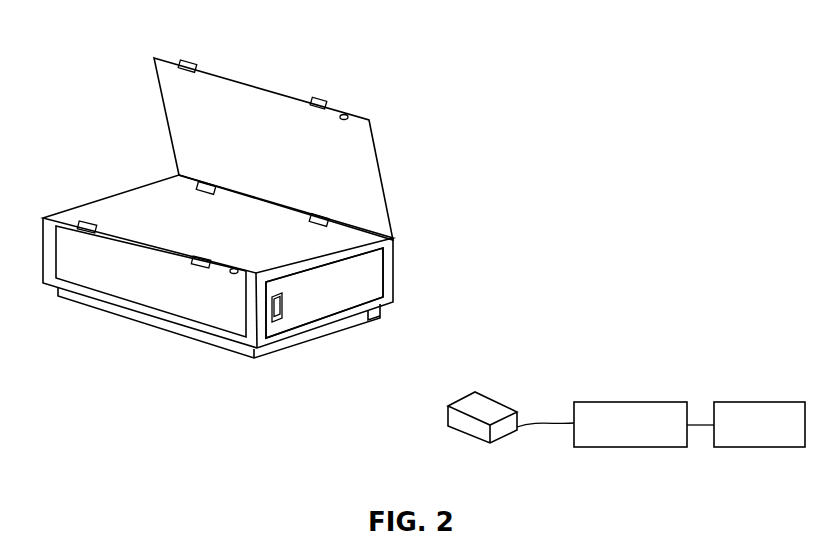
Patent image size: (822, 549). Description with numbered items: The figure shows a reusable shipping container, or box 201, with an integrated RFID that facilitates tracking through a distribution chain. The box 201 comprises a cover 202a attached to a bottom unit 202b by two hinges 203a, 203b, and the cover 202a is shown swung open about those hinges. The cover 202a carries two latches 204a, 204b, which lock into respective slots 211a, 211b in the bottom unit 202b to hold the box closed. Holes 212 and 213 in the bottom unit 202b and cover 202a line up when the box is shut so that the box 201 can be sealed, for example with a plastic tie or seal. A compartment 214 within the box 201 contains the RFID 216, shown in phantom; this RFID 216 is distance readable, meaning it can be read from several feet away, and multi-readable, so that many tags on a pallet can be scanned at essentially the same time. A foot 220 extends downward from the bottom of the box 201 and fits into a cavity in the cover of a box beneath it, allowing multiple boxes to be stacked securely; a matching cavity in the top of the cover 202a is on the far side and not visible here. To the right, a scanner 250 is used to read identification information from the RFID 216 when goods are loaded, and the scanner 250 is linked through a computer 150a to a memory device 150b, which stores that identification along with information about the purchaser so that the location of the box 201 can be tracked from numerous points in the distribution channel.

The box 201 is at (399, 268).
The cover 202a is at (378, 146).
The bottom unit 202b is at (346, 286).
The hinge 203a is at (201, 192).
The hinge 203b is at (312, 224).
The latch 204a is at (318, 97).
The latch 204b is at (186, 61).
The slot 211a is at (200, 268).
The slot 211b is at (83, 233).
The hole 212 is at (345, 114).
The hole 213 is at (233, 276).
The compartment 214 is at (275, 326).
The RFID 216 is at (280, 305).
The foot 220 is at (367, 319).
The scanner 250 is at (485, 405).
The computer 150a is at (600, 402).
The memory device 150b is at (748, 402).